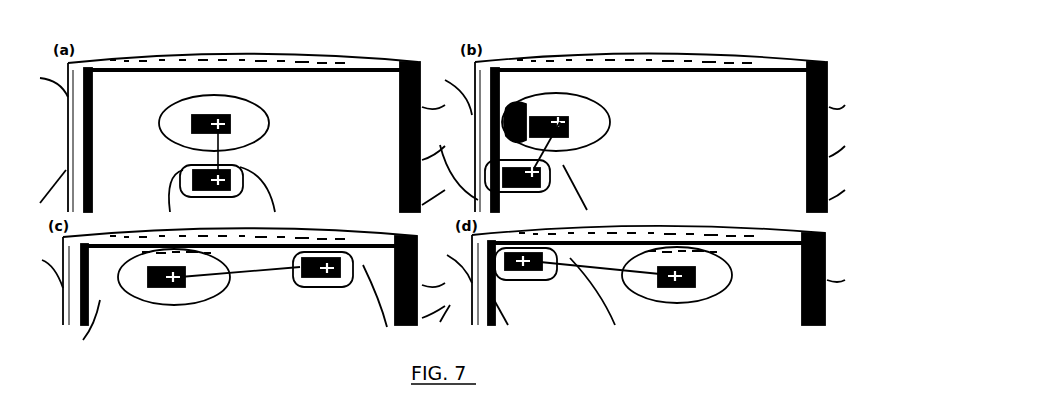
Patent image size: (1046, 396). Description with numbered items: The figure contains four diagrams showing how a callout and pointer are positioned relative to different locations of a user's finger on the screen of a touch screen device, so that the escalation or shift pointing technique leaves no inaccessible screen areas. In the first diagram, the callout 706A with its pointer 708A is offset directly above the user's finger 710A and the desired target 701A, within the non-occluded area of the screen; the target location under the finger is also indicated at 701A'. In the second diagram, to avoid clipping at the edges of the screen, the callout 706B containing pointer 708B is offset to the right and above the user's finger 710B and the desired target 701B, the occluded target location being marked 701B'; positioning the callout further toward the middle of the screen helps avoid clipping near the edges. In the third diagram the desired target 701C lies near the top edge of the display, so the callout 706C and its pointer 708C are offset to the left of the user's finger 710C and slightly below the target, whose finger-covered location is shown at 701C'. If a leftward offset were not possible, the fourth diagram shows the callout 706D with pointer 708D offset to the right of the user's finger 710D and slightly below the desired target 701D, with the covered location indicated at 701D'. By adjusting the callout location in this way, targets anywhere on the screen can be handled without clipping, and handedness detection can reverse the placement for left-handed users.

The callout 706A is at (173, 106).
The initial display position 701A' is at (200, 96).
The pointer 708A is at (222, 120).
The desired target 701A is at (169, 181).
The user's finger 710A is at (257, 195).
The callout 706B is at (522, 98).
The initial display position 701B' is at (542, 79).
The pointer 708B is at (560, 122).
The desired target 701B is at (571, 166).
The user's finger 710B is at (553, 192).
The callout 706C is at (120, 285).
The initial display position 701C' is at (142, 315).
The pointer 708C is at (177, 288).
The desired target 701C is at (271, 287).
The user's finger 710C is at (330, 303).
The callout 706D is at (645, 302).
The initial display position 701D' is at (666, 321).
The pointer 708D is at (680, 262).
The desired target 701D is at (544, 277).
The user's finger 710D is at (537, 305).